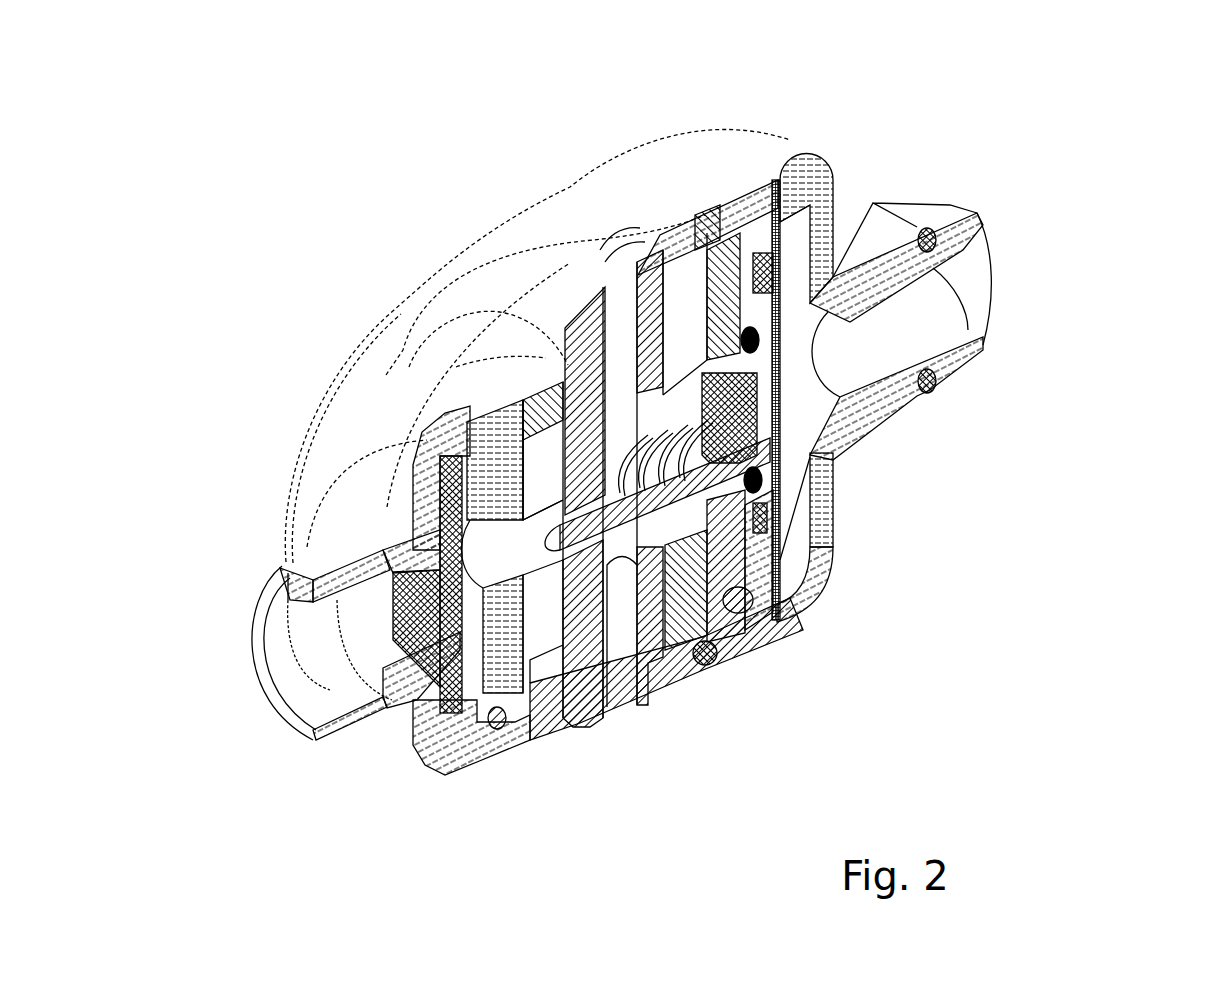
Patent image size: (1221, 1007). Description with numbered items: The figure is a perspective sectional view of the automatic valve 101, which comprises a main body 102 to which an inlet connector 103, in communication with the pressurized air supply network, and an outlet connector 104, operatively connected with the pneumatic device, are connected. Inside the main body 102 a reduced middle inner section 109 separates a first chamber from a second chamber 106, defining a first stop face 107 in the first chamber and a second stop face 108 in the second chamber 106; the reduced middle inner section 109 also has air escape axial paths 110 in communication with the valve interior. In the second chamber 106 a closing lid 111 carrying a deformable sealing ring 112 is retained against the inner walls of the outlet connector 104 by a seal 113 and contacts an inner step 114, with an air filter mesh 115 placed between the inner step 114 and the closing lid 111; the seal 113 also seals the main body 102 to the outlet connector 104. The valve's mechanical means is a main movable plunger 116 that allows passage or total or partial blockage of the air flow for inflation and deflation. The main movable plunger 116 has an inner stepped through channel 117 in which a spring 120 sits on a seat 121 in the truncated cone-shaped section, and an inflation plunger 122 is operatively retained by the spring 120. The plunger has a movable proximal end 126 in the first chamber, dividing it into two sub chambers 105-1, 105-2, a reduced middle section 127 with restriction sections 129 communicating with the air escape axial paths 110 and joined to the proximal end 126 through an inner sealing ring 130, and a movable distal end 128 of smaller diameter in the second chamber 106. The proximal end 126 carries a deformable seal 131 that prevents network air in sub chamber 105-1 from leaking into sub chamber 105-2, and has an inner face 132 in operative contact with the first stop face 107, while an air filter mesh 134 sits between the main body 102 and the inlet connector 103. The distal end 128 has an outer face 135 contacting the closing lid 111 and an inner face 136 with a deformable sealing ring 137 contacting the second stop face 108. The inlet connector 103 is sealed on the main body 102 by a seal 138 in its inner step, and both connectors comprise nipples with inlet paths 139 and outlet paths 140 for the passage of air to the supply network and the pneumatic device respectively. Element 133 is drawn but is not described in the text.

The automatic valve 101 is at (1065, 487).
The main body 102 is at (565, 370).
The inlet connector 103 is at (807, 167).
The outlet connector 104 is at (333, 430).
The sub chamber 105-1 is at (787, 227).
The sub chamber 105-2 is at (688, 225).
The second chamber 106 is at (548, 600).
The first stop face 107 is at (667, 630).
The second stop face 108 is at (590, 603).
The reduced middle inner section 109 is at (515, 197).
The air escape axial paths 110 is at (620, 350).
The closing lid 111 is at (473, 447).
The deformable sealing ring 112 is at (500, 482).
The seal 113 is at (503, 705).
The inner step 114 is at (470, 430).
The air filter mesh 115 is at (400, 570).
The main movable plunger 116 is at (742, 572).
The inner stepped through channel 117 is at (408, 455).
The spring 120 is at (772, 535).
The seat 121 is at (638, 443).
The inflation plunger 122 is at (740, 432).
The movable proximal end 126 is at (772, 235).
The reduced middle section 127 is at (670, 288).
The movable distal end 128 is at (565, 598).
The restriction sections 129 is at (612, 265).
The inner sealing ring 130 is at (765, 495).
The deformable seal 131 is at (742, 240).
The inner face 132 is at (708, 235).
The rear body 133 is at (778, 575).
The air filter mesh 134 is at (780, 273).
The outer face 135 is at (460, 475).
The inner face 136 is at (683, 373).
The deformable sealing ring 137 is at (500, 408).
The seal 138 is at (703, 673).
The inlet paths 139 is at (930, 307).
The outlet paths 140 is at (293, 673).